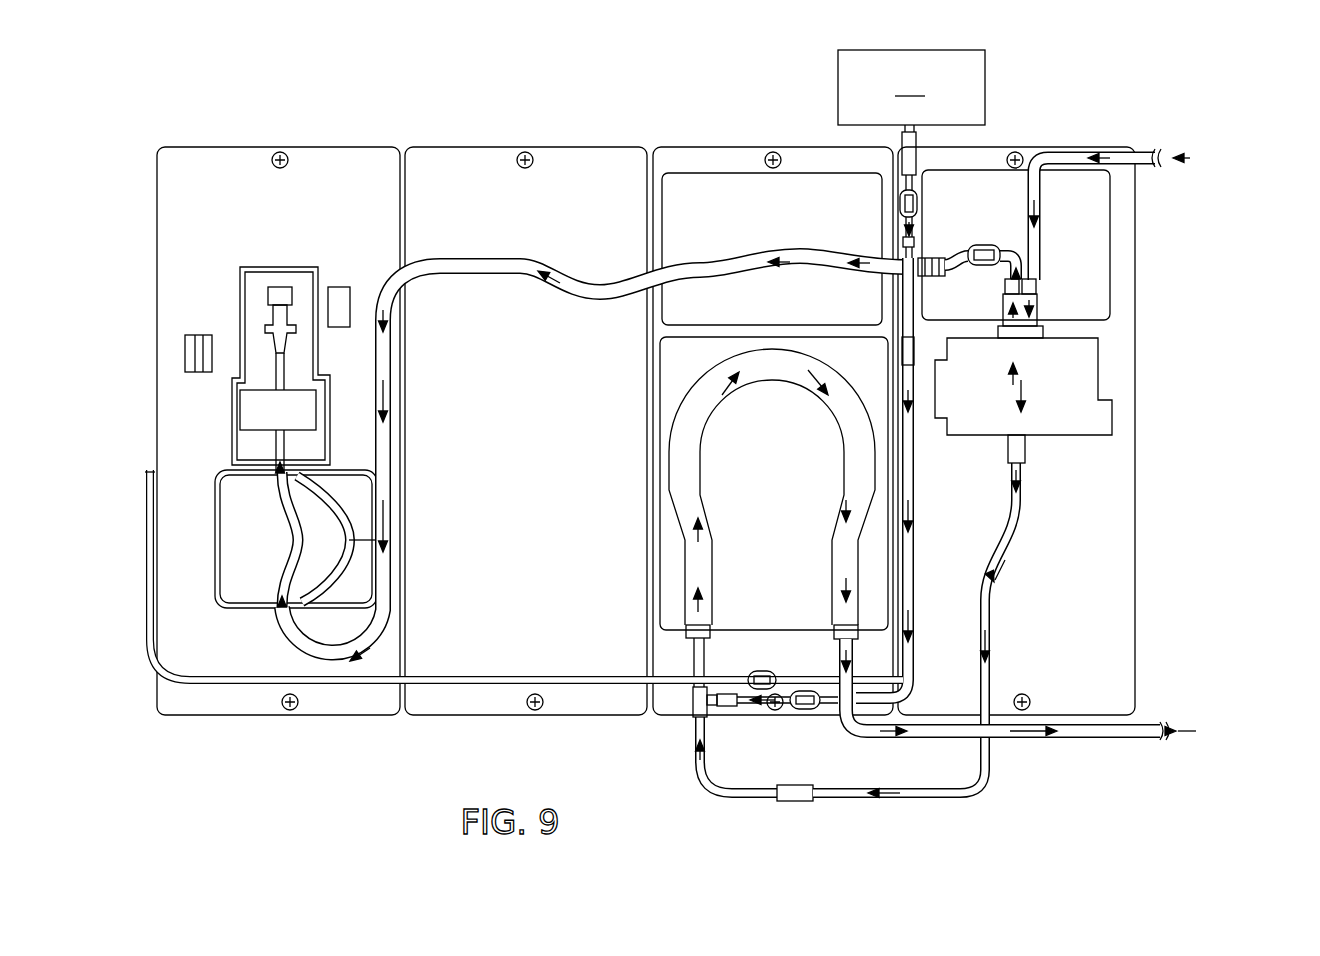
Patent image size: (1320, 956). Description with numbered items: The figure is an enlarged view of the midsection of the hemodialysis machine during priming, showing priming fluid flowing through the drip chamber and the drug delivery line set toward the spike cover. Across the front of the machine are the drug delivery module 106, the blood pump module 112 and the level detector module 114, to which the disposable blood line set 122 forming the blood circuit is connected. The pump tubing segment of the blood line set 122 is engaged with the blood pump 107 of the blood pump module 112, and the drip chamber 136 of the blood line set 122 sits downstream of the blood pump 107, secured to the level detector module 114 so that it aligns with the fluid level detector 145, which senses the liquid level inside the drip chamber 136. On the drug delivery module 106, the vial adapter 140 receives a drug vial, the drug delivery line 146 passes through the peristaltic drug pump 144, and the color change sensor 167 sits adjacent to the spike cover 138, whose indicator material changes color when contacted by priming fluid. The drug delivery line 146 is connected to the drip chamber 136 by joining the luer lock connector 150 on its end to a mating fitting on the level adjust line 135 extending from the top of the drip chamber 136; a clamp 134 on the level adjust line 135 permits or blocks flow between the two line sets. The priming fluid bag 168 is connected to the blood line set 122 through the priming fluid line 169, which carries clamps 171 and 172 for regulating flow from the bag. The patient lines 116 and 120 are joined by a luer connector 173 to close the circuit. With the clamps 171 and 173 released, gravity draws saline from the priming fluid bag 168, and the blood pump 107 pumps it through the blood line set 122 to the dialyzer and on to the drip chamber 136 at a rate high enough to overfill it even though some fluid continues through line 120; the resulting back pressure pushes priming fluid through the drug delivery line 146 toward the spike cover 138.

The drug delivery module 106 is at (275, 150).
The blood pump 107 is at (730, 598).
The blood pump module 112 is at (750, 160).
The level detector module 114 is at (985, 245).
The patient line 116 is at (693, 735).
The patient line 120 is at (965, 792).
The blood line set 122 is at (1008, 758).
The clamp 134 is at (1024, 156).
The level adjust line 135 is at (1022, 258).
The drip chamber 136 is at (1045, 330).
The spike cover 138 is at (278, 288).
The vial adapter 140 is at (276, 332).
The peristaltic drug pump 144 is at (208, 578).
The fluid level detector 145 is at (1112, 418).
The drug delivery line 146 is at (722, 262).
The luer lock connector 150 is at (940, 257).
The color change sensor 167 is at (340, 287).
The priming fluid bag 168 is at (911, 91).
The priming fluid line 169 is at (912, 545).
The clamp 171 is at (900, 200).
The clamp 172 is at (805, 708).
The luer connector 173 is at (803, 785).